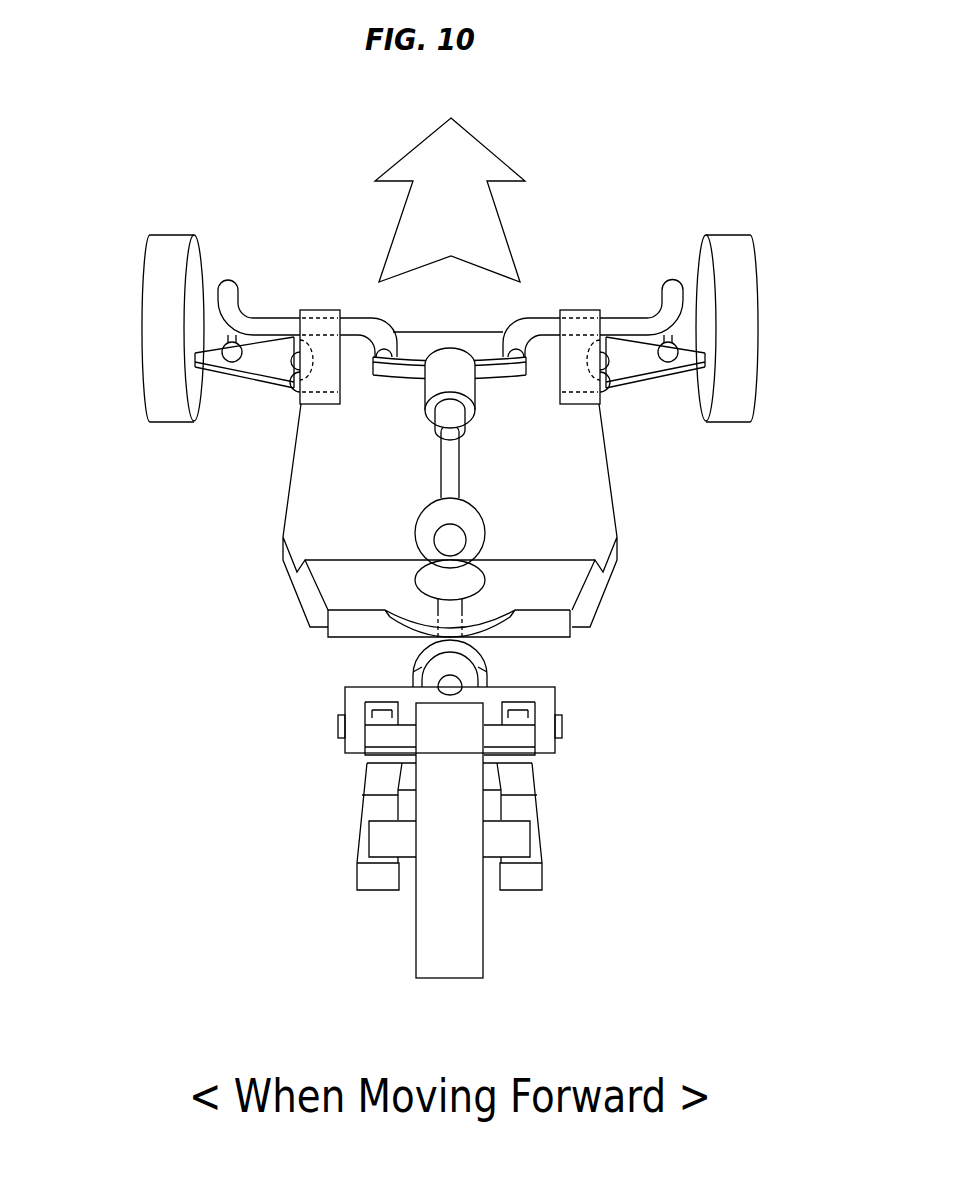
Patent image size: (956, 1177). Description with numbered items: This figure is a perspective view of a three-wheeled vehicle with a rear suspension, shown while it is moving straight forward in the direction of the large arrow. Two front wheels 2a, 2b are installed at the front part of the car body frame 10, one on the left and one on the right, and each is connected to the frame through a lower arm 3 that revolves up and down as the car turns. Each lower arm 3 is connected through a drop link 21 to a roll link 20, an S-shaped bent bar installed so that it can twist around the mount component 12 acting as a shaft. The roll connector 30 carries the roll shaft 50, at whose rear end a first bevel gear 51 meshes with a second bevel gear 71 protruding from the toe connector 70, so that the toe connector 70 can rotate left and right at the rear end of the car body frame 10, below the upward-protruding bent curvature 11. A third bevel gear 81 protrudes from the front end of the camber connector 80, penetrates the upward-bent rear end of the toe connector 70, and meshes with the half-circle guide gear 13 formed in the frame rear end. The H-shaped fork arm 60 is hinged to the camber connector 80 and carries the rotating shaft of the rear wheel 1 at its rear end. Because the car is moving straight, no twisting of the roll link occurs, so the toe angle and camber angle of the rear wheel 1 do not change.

The rear wheel 1 is at (448, 920).
The front wheel 2a is at (158, 262).
The front wheel 2b is at (733, 250).
The lower arm 3 is at (272, 367).
The car body frame 10 is at (330, 520).
The bent curvature 11 is at (598, 573).
The mount component 12 is at (328, 310).
The guide gear 13 is at (478, 637).
The roll link 20 is at (263, 325).
The drop link 21 is at (232, 377).
The roll connector 30 is at (463, 382).
The roll shaft 50 is at (450, 468).
The first bevel gear 51 is at (485, 528).
The fork arm 60 is at (367, 793).
The toe connector 70 is at (485, 675).
The second bevel gear 71 is at (427, 580).
The camber connector 80 is at (353, 702).
The third bevel gear 81 is at (423, 643).